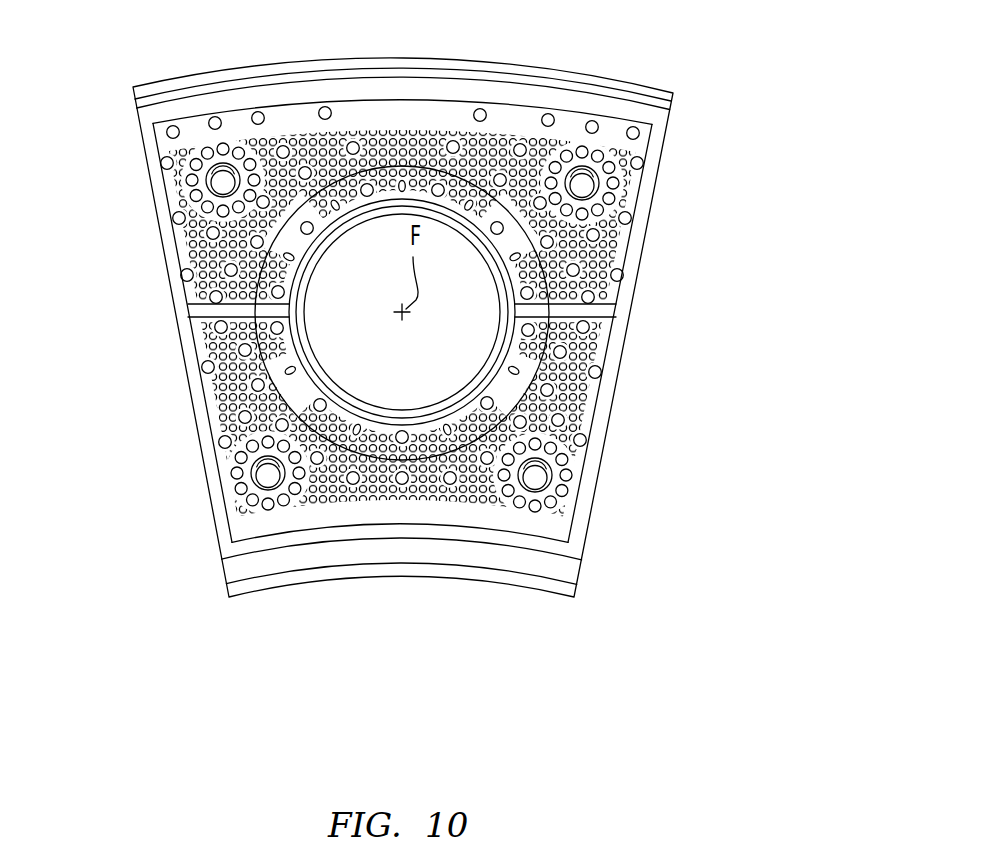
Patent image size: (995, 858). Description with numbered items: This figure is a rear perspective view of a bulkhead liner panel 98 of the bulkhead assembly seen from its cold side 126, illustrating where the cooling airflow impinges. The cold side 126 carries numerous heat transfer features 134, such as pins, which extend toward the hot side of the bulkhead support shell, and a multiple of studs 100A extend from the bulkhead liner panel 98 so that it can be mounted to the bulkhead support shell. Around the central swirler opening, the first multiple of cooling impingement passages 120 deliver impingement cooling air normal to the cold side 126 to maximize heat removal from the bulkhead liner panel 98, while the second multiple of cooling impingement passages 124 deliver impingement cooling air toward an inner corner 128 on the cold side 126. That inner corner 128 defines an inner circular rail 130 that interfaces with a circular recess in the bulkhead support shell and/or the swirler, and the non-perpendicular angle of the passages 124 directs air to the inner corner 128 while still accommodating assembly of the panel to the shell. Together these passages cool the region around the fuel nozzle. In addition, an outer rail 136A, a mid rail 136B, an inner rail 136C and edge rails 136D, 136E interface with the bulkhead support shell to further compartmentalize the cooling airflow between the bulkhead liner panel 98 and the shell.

The bulkhead liner panel 98 is at (660, 358).
The stud 100A is at (583, 185).
The first multiple of cooling impingement passages 120 is at (402, 185).
The second multiple of cooling impingement passages 124 is at (438, 190).
The cold side 126 is at (560, 523).
The inner corner 128 is at (547, 347).
The inner circular rail 130 is at (422, 417).
The heat transfer features 134 is at (335, 498).
The outer rail 136A is at (637, 117).
The mid rail 136B is at (597, 313).
The inner rail 136C is at (543, 547).
The edge rail 136D is at (613, 375).
The edge rail 136E is at (162, 248).